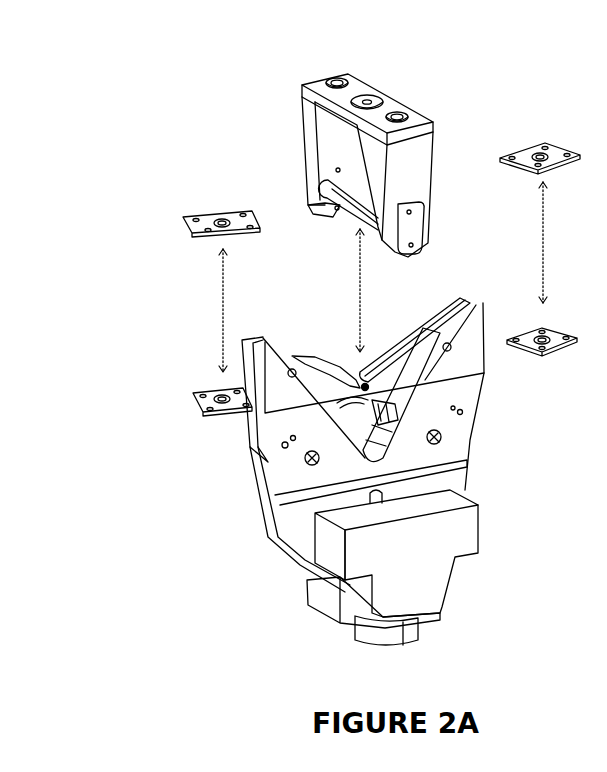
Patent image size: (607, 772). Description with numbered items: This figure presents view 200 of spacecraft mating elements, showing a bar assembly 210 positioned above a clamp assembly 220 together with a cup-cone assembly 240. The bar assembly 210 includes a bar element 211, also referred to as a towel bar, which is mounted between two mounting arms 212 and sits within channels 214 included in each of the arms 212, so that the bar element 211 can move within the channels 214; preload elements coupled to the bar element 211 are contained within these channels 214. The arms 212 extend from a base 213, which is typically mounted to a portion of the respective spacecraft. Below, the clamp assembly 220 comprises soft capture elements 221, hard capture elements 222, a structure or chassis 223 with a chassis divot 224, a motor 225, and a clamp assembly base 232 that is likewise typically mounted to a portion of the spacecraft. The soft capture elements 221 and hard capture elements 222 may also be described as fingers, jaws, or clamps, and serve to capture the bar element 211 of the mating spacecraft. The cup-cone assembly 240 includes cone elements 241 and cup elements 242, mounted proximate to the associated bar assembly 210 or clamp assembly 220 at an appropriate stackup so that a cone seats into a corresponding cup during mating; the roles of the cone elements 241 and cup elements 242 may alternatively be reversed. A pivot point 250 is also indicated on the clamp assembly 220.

The view 200 is at (393, 41).
The bar assembly 210 is at (364, 156).
The bar element 211 is at (349, 219).
The mounting arms 212 is at (304, 150).
The base 213 is at (394, 102).
The channels 214 is at (323, 213).
The clamp assembly 220 is at (371, 482).
The soft capture elements 221 is at (382, 341).
The hard capture elements 222 is at (393, 414).
The structure/chassis 223 is at (485, 423).
The chassis divot 224 is at (392, 459).
The motor 225 is at (485, 520).
The clamp assembly base 232 is at (357, 633).
The cup-cone assembly 240 is at (349, 280).
The cone elements 241 is at (218, 207).
The cup elements 242 is at (198, 419).
The pivot 250 is at (361, 382).